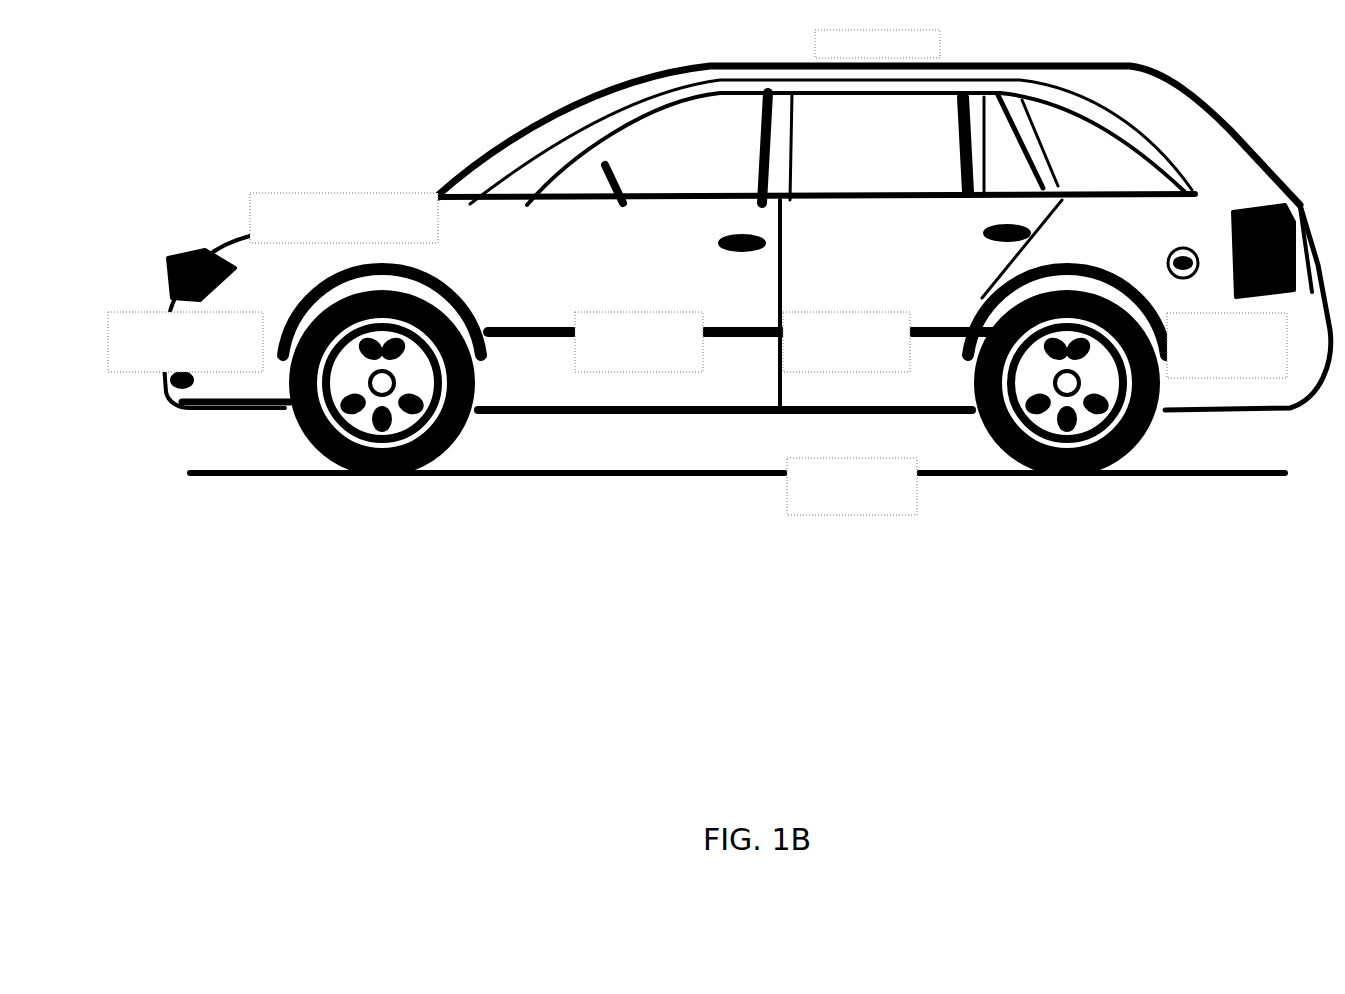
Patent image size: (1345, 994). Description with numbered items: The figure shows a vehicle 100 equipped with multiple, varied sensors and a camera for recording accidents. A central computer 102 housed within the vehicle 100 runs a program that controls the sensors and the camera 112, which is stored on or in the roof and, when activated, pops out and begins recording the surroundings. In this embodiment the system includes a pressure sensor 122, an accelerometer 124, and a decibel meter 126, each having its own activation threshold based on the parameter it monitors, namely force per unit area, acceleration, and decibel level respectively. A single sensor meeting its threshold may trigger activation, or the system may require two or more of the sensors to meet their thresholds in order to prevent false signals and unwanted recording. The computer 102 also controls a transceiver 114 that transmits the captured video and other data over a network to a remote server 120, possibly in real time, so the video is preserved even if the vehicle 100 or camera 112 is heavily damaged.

The vehicle 100 is at (747, 256).
The computer 102 is at (1225, 378).
The camera 112 is at (845, 312).
The transceiver 114 is at (852, 458).
The remote server 120 is at (852, 486).
The pressure sensor 122 is at (1227, 345).
The accelerometer 124 is at (575, 342).
The decibel meter 126 is at (639, 312).